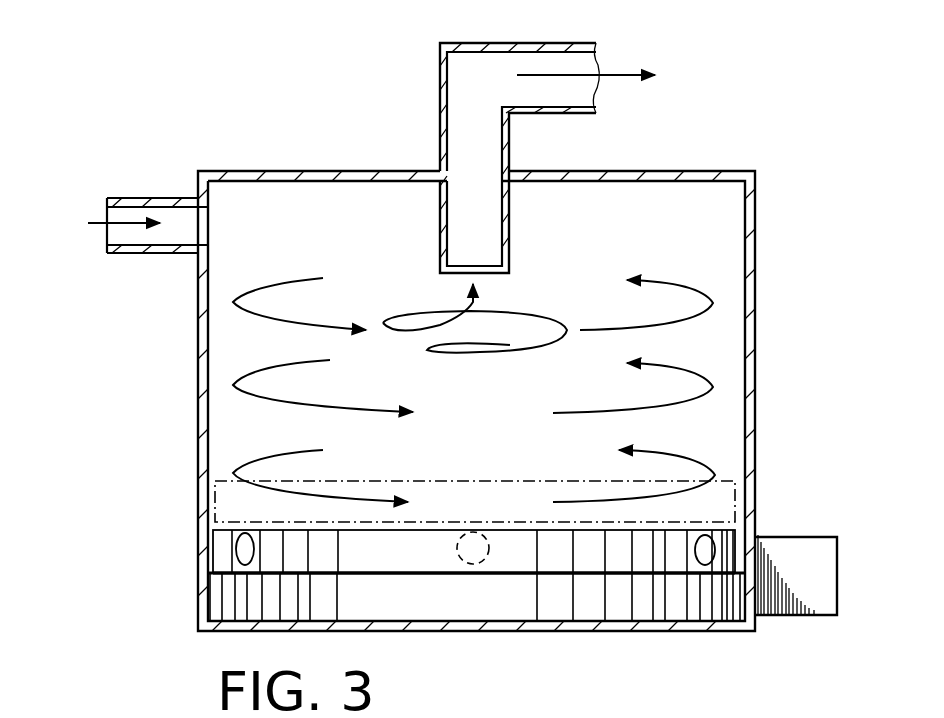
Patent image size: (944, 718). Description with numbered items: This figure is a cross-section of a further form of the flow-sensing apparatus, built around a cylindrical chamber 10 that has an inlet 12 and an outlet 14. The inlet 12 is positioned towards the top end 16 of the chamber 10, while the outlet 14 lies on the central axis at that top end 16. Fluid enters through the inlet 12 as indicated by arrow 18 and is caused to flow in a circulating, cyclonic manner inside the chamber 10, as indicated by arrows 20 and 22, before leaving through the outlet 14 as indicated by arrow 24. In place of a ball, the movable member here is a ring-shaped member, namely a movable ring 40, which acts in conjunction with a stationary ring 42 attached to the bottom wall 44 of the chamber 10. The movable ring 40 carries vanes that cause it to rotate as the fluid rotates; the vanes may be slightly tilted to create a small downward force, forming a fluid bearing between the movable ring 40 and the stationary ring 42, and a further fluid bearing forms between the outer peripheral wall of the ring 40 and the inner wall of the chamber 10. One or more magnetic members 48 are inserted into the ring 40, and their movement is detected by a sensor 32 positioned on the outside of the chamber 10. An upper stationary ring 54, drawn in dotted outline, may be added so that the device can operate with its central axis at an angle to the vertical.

The cylindrical chamber 10 is at (756, 205).
The inlet 12 is at (127, 278).
The outlet 14 is at (456, 44).
The top end 16 is at (320, 171).
The arrow 18 is at (152, 280).
The arrows 20 is at (690, 372).
The arrows 22 is at (480, 358).
The arrow 24 is at (617, 72).
The sensor 32 is at (770, 543).
The movable ring 40 is at (518, 558).
The stationary ring 42 is at (620, 603).
The bottom wall 44 is at (515, 632).
The magnetic members 48 is at (247, 546).
The upper stationary ring 54 is at (200, 503).